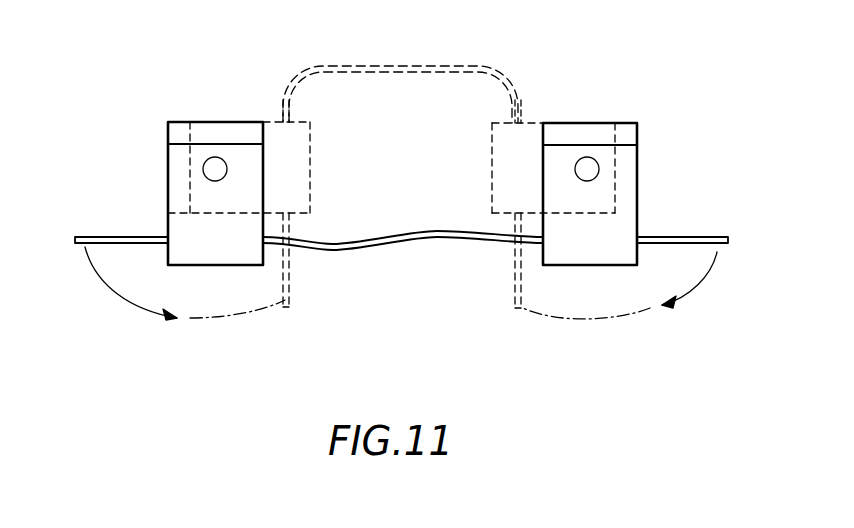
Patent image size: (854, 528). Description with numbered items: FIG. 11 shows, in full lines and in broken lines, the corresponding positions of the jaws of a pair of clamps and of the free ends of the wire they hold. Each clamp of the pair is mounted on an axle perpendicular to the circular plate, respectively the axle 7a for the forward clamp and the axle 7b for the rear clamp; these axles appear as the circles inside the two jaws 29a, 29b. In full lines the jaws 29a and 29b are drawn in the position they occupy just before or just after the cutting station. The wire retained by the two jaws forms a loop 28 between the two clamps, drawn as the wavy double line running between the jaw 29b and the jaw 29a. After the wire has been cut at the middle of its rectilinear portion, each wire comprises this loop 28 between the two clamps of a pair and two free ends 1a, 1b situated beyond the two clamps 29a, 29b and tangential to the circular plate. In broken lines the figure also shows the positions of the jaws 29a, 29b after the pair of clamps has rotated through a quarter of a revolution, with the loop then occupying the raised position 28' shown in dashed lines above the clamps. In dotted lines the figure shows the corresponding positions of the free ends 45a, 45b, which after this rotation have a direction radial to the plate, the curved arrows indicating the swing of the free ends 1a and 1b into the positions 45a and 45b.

The jaw 29a is at (632, 155).
The jaw 29b is at (180, 160).
The axle 7a is at (590, 171).
The axle 7b is at (213, 173).
The free end 1a is at (107, 237).
The free end 1b is at (707, 237).
The loop 28 is at (403, 262).
The connecting rod in alternate position 28' is at (400, 70).
The free end 45a is at (303, 308).
The free end 45b is at (505, 302).